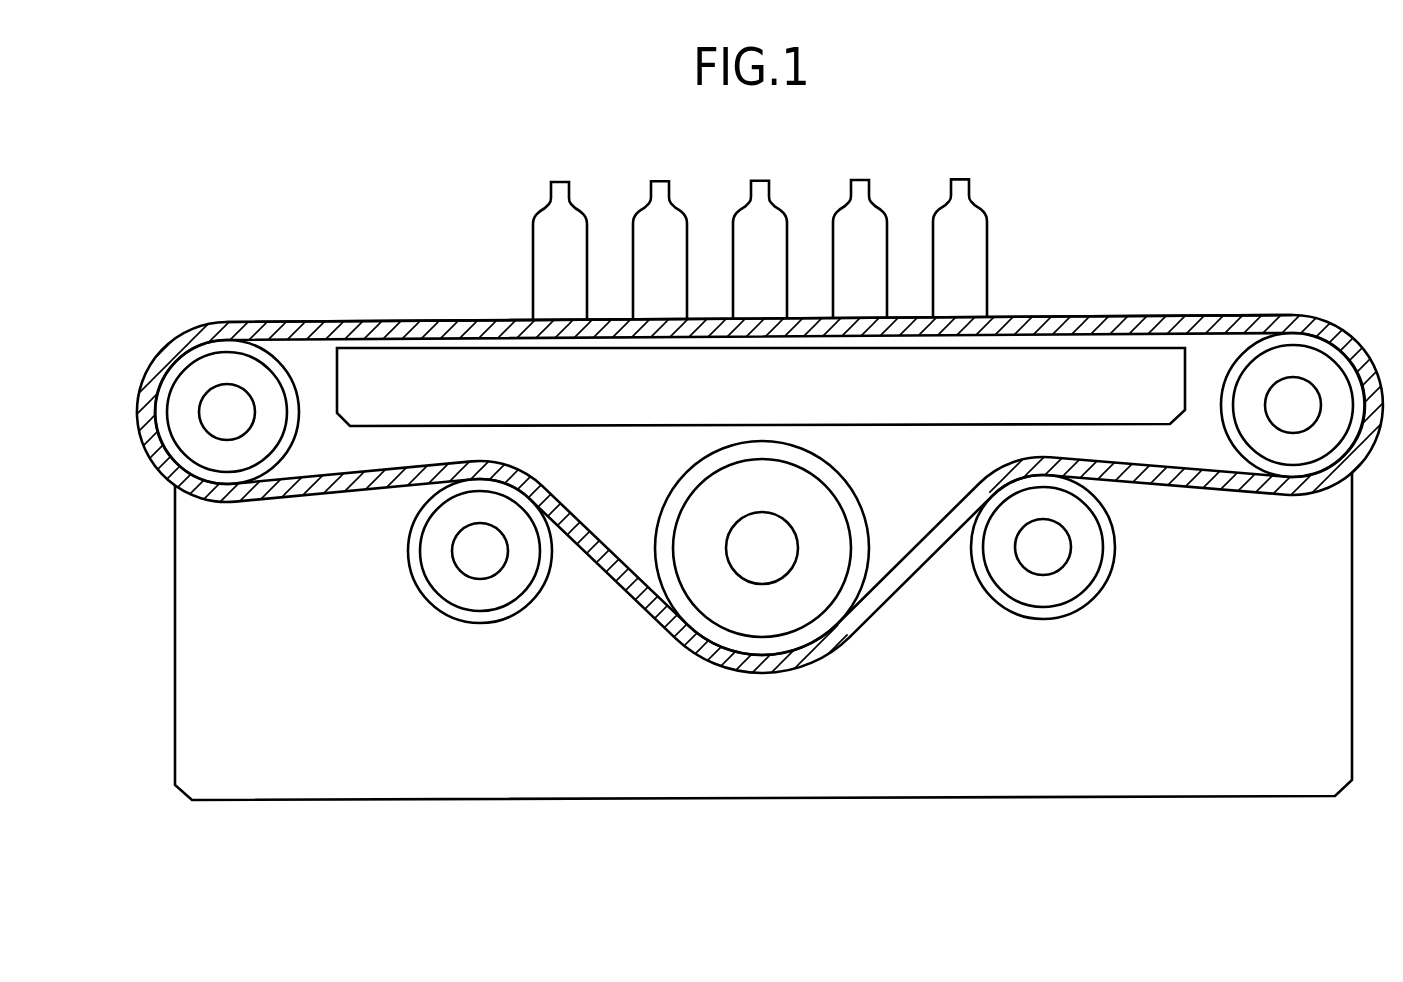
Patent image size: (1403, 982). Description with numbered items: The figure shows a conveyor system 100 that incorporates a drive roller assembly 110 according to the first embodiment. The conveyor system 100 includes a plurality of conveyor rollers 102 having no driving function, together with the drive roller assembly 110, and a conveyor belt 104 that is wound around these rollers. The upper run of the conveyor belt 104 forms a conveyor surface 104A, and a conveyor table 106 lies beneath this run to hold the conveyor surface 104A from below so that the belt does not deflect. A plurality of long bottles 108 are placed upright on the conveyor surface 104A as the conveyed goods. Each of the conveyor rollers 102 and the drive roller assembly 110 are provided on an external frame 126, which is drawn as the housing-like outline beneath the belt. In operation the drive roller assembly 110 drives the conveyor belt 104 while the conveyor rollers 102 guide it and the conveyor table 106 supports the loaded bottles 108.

The conveyor system 100 is at (1289, 196).
The conveyor rollers 102 is at (223, 452).
The conveyor belt 104 is at (633, 597).
The conveyor surface 104A is at (1115, 315).
The conveyor table 106 is at (412, 363).
The long bottles 108 is at (993, 238).
The drive roller assembly 110 is at (765, 618).
The external frame 126 is at (1063, 772).